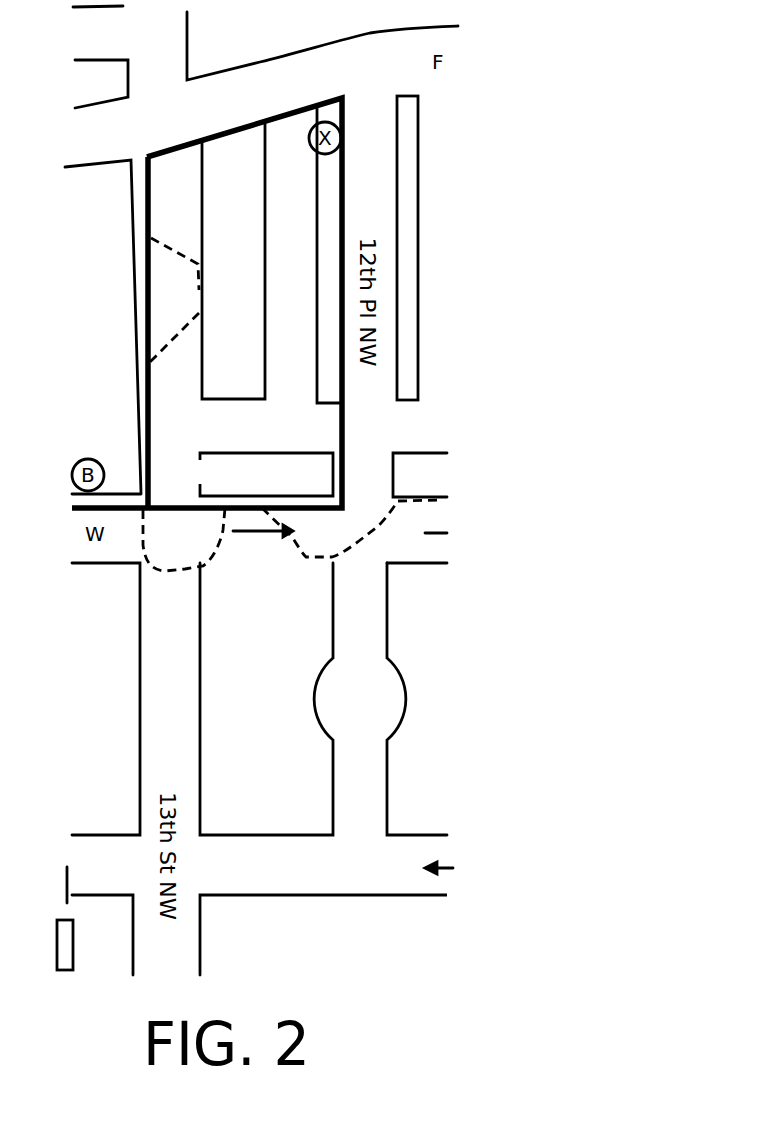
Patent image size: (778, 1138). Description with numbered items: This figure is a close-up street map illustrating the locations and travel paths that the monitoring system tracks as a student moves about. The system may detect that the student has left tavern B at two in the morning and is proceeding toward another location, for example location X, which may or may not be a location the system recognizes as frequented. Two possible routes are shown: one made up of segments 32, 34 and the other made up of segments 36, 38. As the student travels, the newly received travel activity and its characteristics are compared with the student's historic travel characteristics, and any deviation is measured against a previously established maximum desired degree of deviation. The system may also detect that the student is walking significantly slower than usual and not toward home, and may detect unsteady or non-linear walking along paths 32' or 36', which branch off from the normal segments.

The travel segment 34 is at (240, 128).
The travel segment 38 is at (342, 317).
The path 32' is at (205, 265).
The travel segment 32 is at (173, 353).
The travel segment 36 is at (260, 474).
The path 36' is at (291, 562).